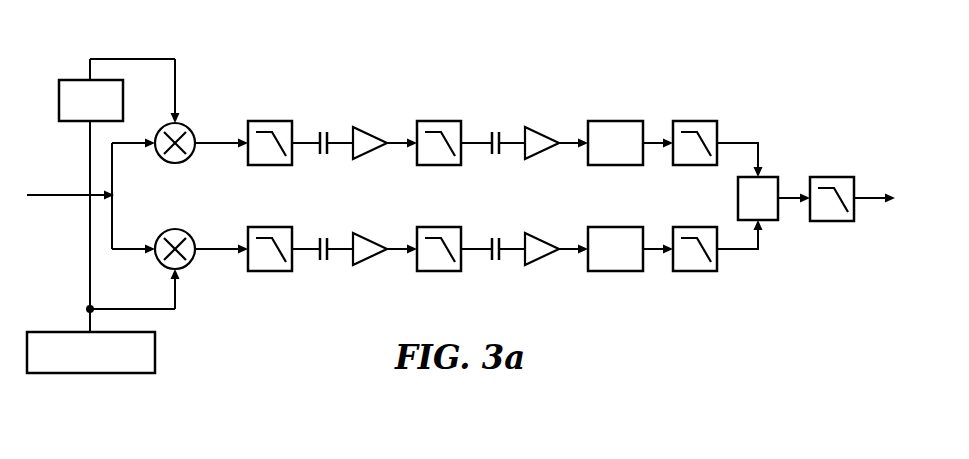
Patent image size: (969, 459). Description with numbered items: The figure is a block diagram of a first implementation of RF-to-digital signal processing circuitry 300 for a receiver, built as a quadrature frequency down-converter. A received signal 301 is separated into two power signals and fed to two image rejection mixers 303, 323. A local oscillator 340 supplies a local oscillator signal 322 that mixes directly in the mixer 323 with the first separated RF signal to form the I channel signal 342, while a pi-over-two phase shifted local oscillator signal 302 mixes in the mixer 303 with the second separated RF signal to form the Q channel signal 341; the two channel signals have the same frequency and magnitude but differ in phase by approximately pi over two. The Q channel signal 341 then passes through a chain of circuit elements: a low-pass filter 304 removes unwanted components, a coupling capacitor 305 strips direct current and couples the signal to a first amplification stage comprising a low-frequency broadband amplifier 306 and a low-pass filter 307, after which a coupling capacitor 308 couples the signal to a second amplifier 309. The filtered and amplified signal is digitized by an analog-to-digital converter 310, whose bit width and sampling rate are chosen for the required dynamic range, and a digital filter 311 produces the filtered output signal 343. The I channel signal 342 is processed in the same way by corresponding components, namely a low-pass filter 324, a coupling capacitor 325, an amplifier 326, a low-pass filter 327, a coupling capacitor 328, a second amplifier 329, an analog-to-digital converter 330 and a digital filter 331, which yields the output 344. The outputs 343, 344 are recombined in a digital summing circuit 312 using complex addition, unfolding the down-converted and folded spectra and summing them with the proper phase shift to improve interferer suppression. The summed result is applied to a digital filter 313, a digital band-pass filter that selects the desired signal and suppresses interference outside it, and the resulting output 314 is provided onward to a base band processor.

The RF-to-digital signal processing circuitry 300 is at (592, 56).
The received signal 301 is at (65, 198).
The pi/2 phase shifted local oscillator signal 302 is at (128, 58).
The image rejection mixer 303 is at (181, 162).
The low-pass filter 304 is at (270, 121).
The coupling capacitor 305 is at (322, 132).
The low-frequency broadband amplifier 306 is at (374, 136).
The low-pass filter 307 is at (440, 121).
The coupling capacitor 308 is at (495, 132).
The second amplifier 309 is at (546, 136).
The analog-to-digital converter 310 is at (617, 121).
The digital filter 311 is at (697, 121).
The summing circuit 312 is at (737, 198).
The digital filter 313 is at (835, 176).
The output 314 is at (870, 199).
The local oscillator signal 322 is at (132, 307).
The image rejection mixer 323 is at (162, 234).
The low-pass filter 324 is at (270, 272).
The coupling capacitor 325 is at (323, 261).
The amplifier 326 is at (375, 255).
The low-pass filter 327 is at (440, 272).
The coupling capacitor 328 is at (495, 261).
The amplifier 329 is at (546, 255).
The analog-to-digital converter 330 is at (617, 272).
The digital filter 331 is at (697, 272).
The local oscillator 340 is at (62, 331).
The Q channel signal 341 is at (222, 142).
The I channel signal 342 is at (222, 250).
The filtered output signal 343 is at (745, 143).
The output 344 is at (742, 250).